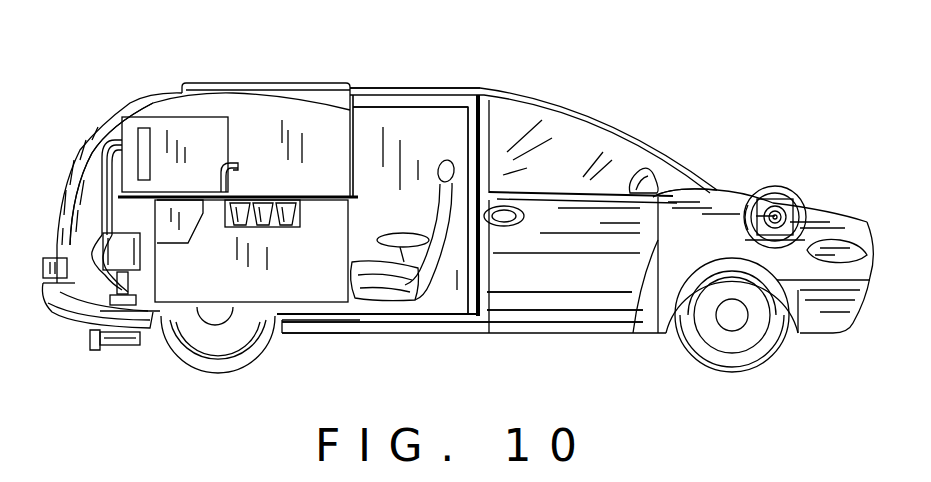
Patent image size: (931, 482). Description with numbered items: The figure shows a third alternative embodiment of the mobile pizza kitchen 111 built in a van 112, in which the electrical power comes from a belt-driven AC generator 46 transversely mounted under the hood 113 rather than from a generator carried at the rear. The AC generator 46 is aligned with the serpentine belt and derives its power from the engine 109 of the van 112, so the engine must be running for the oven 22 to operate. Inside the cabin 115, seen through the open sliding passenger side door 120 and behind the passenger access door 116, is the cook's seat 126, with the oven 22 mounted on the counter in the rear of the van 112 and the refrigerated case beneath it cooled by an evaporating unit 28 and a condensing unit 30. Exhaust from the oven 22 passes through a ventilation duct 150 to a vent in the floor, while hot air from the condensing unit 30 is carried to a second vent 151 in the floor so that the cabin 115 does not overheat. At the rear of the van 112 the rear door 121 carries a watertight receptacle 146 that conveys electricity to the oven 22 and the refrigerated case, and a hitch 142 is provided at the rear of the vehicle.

The oven 22 is at (200, 117).
The ventilation duct 150 is at (112, 115).
The rear door 121 is at (88, 152).
The condensing unit 30 is at (117, 250).
The watertight receptacle 146 is at (43, 270).
The hitch 142 is at (110, 343).
The second vent 151 is at (136, 305).
The evaporating unit 28 is at (177, 230).
The sliding passenger side door 120 is at (317, 312).
The cook's seat 126 is at (447, 277).
The passenger access door 116 is at (540, 302).
The van 112 is at (578, 352).
The mobile pizza kitchen 111 is at (391, 66).
The cabin 115 is at (450, 142).
The hood 113 is at (727, 193).
The AC generator 46 is at (778, 182).
The engine 109 is at (628, 295).